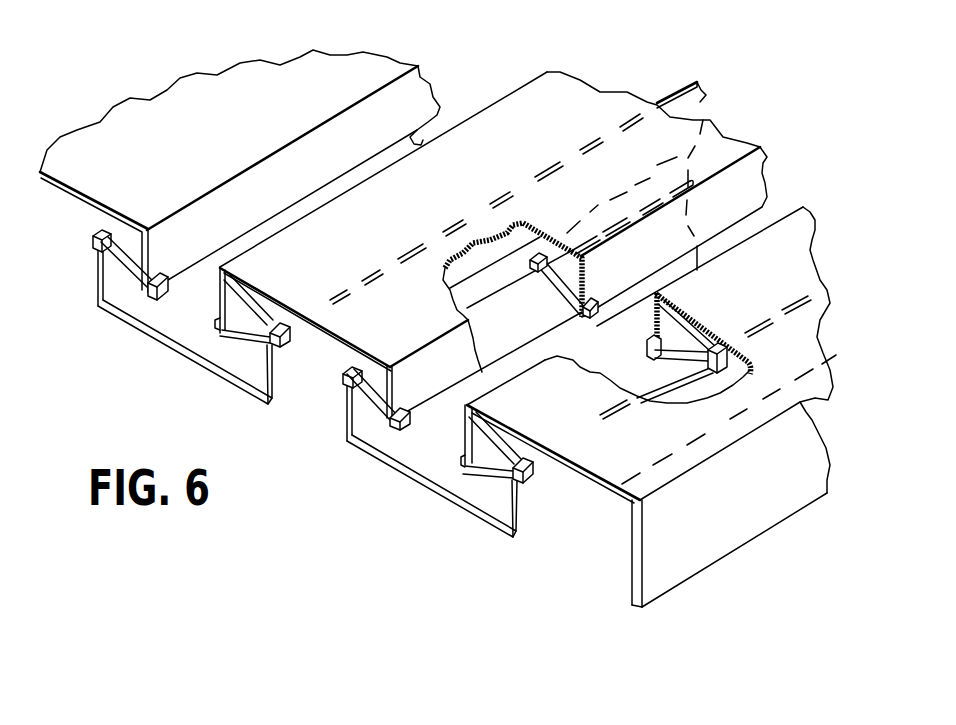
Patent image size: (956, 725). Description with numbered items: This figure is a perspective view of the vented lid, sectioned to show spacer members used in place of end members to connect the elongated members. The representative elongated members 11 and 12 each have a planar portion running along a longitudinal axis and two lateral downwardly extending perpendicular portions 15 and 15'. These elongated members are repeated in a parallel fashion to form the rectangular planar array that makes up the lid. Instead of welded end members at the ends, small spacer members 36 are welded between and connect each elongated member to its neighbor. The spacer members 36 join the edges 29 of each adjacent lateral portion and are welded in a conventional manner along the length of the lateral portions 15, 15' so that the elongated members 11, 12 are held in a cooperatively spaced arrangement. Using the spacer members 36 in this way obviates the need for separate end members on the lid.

The elongated member 11 is at (786, 228).
The elongated member 12 is at (477, 150).
The lateral downwardly extending perpendicular portion 15 is at (312, 317).
The lateral downwardly extending perpendicular portion 15' is at (275, 390).
The edge of lateral portion 29 is at (374, 393).
The spacer member 36 is at (386, 360).